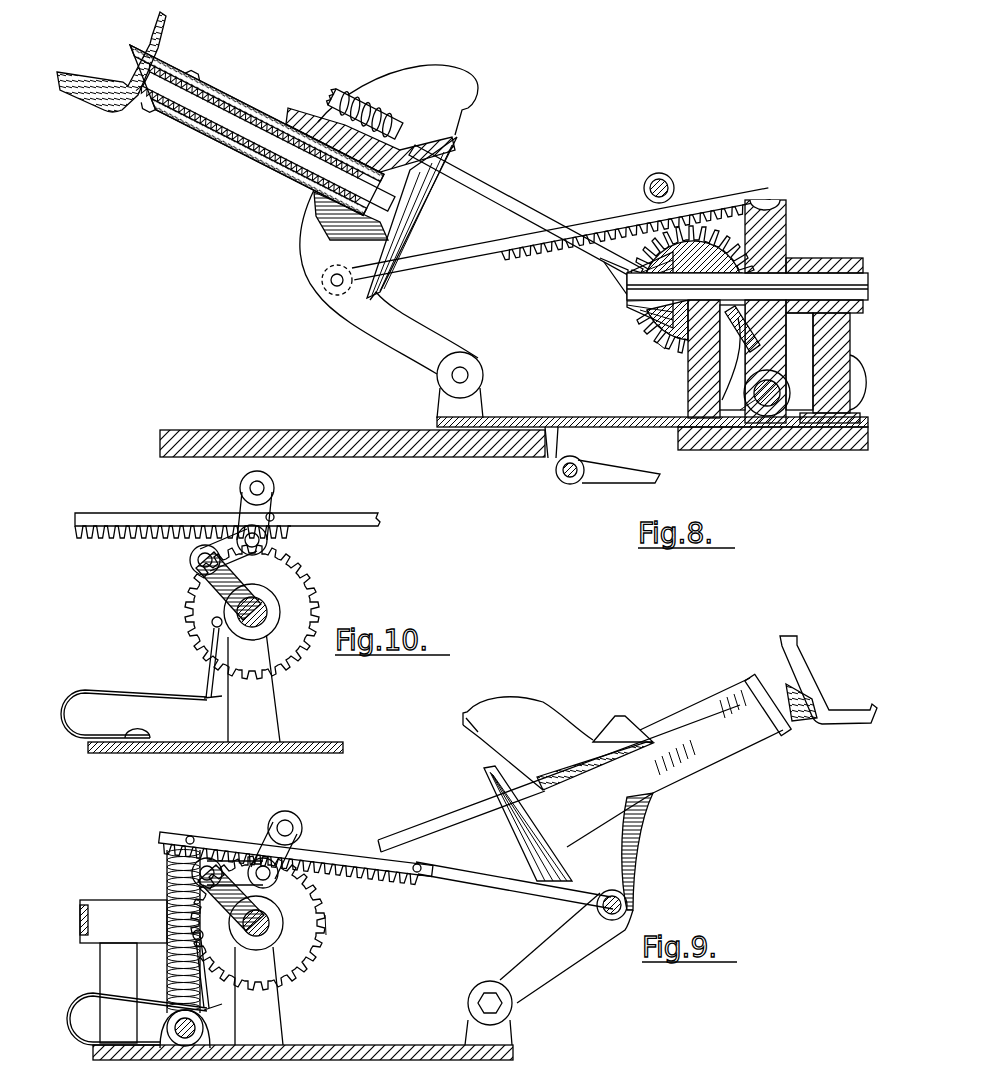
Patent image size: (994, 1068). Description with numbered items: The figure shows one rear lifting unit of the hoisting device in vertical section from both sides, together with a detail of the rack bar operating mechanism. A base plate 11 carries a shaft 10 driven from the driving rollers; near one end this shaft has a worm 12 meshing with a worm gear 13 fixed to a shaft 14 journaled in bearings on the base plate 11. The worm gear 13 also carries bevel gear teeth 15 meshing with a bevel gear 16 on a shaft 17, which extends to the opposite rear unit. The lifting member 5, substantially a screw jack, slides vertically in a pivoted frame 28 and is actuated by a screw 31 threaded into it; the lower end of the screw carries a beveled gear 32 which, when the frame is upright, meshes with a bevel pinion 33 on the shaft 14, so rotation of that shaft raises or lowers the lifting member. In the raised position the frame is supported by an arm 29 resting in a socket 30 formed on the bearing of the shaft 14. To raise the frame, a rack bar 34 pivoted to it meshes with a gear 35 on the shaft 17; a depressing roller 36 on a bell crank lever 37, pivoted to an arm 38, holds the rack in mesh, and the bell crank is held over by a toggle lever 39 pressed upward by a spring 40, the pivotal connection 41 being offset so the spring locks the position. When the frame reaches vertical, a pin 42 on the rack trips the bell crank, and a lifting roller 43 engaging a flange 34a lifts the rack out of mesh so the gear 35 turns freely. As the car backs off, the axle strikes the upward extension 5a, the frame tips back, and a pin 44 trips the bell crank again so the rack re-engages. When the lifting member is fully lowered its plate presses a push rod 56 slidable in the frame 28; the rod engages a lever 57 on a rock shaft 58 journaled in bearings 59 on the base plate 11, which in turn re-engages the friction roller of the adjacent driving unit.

In FIG. 8, the lifting member 5 is at (190, 104).
In FIG. 9, the lifting member 5 is at (786, 690).
In FIG. 8, the upward extension 5a is at (76, 97).
In FIG. 9, the upward extension 5a is at (857, 703).
In FIG. 8, the shaft 10 is at (767, 416).
In FIG. 8, the base plate 11 is at (600, 420).
In FIG. 10, the base plate 11 is at (215, 747).
In FIG. 9, the base plate 11 is at (440, 1045).
In FIG. 8, the worm 12 is at (748, 405).
In FIG. 8, the worm gear 13 is at (776, 200).
In FIG. 8, the shaft 14 is at (815, 284).
In FIG. 8, the bevel gear teeth 15 is at (720, 335).
In FIG. 8, the bevel gear 16 is at (655, 340).
In FIG. 10, the shaft 17 is at (272, 628).
In FIG. 9, the shaft 17 is at (272, 942).
In FIG. 8, the pivoted frame 28 is at (271, 168).
In FIG. 9, the pivoted frame 28 is at (683, 780).
In FIG. 8, the arm 29 is at (382, 118).
In FIG. 8, the socket 30 is at (692, 230).
In FIG. 8, the screw 31 is at (213, 93).
In FIG. 8, the beveled gear 32 is at (437, 250).
In FIG. 9, the beveled gear 32 is at (523, 873).
In FIG. 8, the bevel pinion 33 is at (626, 300).
In FIG. 9, the bevel pinion 33 is at (328, 936).
In FIG. 8, the rack bar 34 is at (598, 230).
In FIG. 10, the rack bar 34 is at (176, 536).
In FIG. 9, the rack bar 34 is at (372, 892).
In FIG. 10, the flange 34a is at (161, 519).
In FIG. 9, the flange 34a is at (382, 854).
In FIG. 8, the gear 35 is at (618, 258).
In FIG. 10, the gear 35 is at (292, 602).
In FIG. 9, the gear 35 is at (292, 930).
In FIG. 8, the depressing roller 36 is at (665, 176).
In FIG. 10, the depressing roller 36 is at (242, 482).
In FIG. 9, the depressing roller 36 is at (298, 818).
In FIG. 10, the bell crank lever 37 is at (250, 510).
In FIG. 9, the bell crank lever 37 is at (264, 848).
In FIG. 10, the arm 38 is at (200, 580).
In FIG. 9, the arm 38 is at (212, 858).
In FIG. 10, the toggle lever 39 is at (216, 678).
In FIG. 9, the toggle lever 39 is at (212, 995).
In FIG. 10, the spring 40 is at (143, 690).
In FIG. 9, the spring 40 is at (118, 996).
In FIG. 10, the pivotal connection 41 is at (214, 626).
In FIG. 9, the pivotal connection 41 is at (194, 933).
In FIG. 10, the pin 42 is at (274, 519).
In FIG. 9, the pin 42 is at (422, 866).
In FIG. 10, the lifting roller 43 is at (270, 540).
In FIG. 9, the lifting roller 43 is at (272, 870).
In FIG. 9, the pin 44 is at (194, 840).
In FIG. 8, the push rod 56 is at (522, 203).
In FIG. 9, the push rod 56 is at (462, 808).
In FIG. 8, the lever 57 is at (618, 482).
In FIG. 8, the rock shaft 58 is at (556, 477).
In FIG. 8, the bearing 59 is at (592, 437).